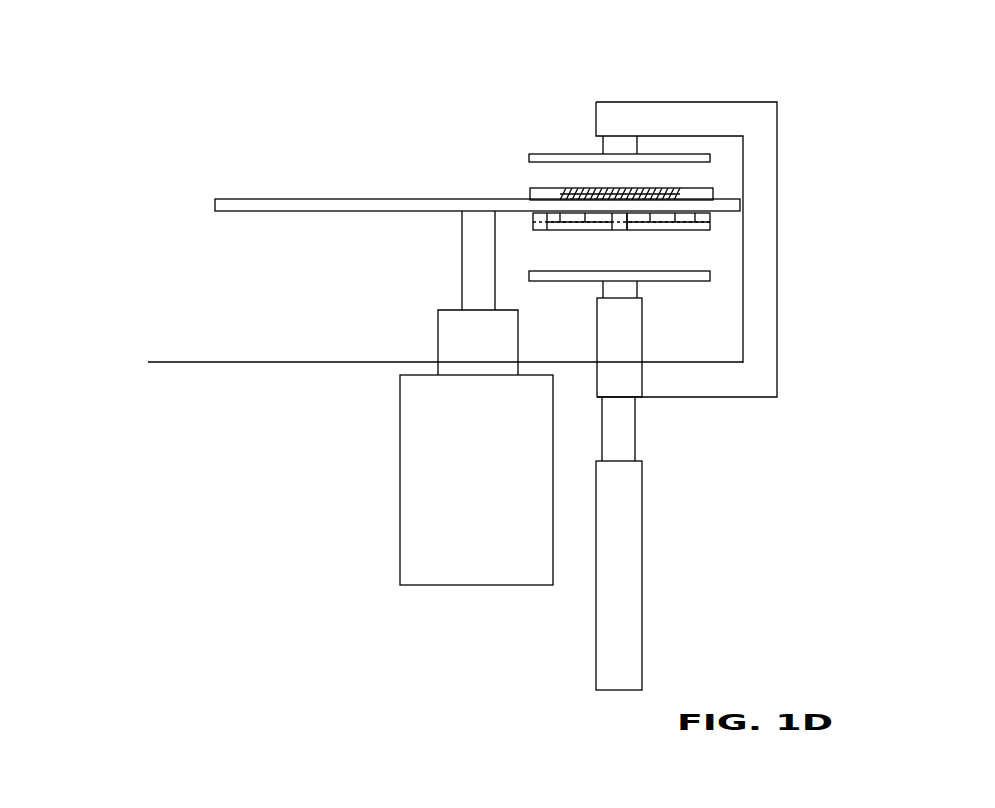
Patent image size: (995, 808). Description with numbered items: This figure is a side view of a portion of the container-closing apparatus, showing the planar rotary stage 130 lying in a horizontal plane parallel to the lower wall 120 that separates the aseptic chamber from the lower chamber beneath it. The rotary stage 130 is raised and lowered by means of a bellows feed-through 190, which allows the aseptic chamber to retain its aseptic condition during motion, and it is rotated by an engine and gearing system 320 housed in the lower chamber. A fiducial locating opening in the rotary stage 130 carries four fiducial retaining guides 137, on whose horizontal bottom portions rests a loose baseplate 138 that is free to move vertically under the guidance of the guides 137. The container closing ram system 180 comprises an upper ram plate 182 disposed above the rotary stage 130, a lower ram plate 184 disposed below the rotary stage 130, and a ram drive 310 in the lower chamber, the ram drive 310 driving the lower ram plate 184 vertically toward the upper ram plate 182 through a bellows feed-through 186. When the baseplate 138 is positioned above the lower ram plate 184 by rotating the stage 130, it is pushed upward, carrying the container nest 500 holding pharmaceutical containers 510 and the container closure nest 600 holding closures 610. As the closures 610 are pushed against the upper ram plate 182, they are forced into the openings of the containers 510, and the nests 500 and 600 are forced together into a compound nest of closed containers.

The lower wall 120 is at (217, 362).
The planar rotary stage 130 is at (283, 203).
The fiducial retaining guides 137 is at (545, 232).
The baseplate 138 is at (663, 229).
The container closing ram system 180 is at (763, 168).
The upper ram plate 182 is at (540, 154).
The lower ram plate 184 is at (658, 281).
The bellows feed-through 186 is at (623, 318).
The bellows feed-through 190 is at (450, 337).
The ram drive 310 is at (637, 482).
The engine and gearing system 320 is at (437, 485).
The container nest 500 is at (533, 222).
The pharmaceutical containers 510 is at (567, 232).
The container closure nest 600 is at (540, 190).
The container closures 610 is at (657, 188).